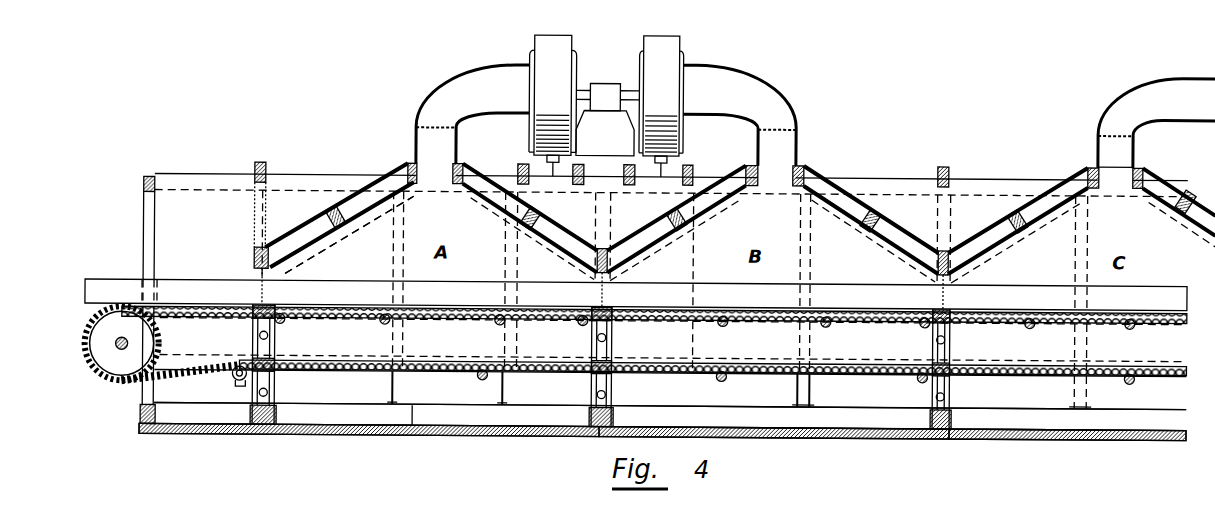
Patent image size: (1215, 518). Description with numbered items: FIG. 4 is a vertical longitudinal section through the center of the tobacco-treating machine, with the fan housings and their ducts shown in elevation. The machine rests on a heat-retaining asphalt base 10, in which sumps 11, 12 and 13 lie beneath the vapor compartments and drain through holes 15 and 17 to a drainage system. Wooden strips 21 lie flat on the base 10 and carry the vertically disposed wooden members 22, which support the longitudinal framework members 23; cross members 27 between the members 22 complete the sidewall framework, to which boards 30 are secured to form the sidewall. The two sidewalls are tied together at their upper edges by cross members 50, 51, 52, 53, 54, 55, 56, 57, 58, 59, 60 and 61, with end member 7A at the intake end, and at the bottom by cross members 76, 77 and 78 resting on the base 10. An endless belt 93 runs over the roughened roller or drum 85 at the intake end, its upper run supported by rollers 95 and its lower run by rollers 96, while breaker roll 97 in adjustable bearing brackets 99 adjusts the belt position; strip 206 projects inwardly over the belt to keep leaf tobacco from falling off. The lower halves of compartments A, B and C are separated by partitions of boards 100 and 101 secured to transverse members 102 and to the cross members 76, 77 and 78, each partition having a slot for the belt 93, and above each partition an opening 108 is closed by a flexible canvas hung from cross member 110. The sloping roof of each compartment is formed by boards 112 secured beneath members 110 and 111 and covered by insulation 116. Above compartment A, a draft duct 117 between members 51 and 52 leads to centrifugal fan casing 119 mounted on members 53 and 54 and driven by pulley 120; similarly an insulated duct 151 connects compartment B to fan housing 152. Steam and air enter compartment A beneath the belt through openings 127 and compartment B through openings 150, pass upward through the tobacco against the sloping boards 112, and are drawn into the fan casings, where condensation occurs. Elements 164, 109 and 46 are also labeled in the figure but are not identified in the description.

The end member 7A is at (146, 176).
The longitudinally disposed framework members 23 is at (206, 166).
The vertically disposed wooden members 22 is at (143, 221).
The cross member 50 is at (265, 163).
The cross member 51 is at (407, 162).
The cross member 52 is at (458, 161).
The cross member 53 is at (519, 161).
The cross member 54 is at (576, 161).
The cross member 55 is at (628, 161).
The cross member 56 is at (687, 161).
The cross member 57 is at (751, 161).
The cross member 58 is at (798, 161).
The cross member 59 is at (944, 162).
The cross member 60 is at (1092, 161).
The cross member 61 is at (1137, 161).
The draft duct 117 is at (415, 125).
The insulated duct 151 is at (789, 110).
The air duct 164 is at (1130, 88).
The centrifugal fan casing 119 is at (568, 32).
The fan housing 152 is at (660, 32).
The pulley 120 is at (614, 84).
The insulating members 116 is at (318, 218).
The cross member 110 is at (280, 260).
The intermediate members 111 is at (343, 213).
The board 112 is at (352, 220).
The boards 30 is at (349, 234).
The opening 108 is at (254, 266).
The bracket connection 109 is at (270, 268).
The strip 206 is at (636, 295).
The roughened roller or drum 85 is at (160, 334).
The endless belt 93 is at (220, 366).
The breaker roll 97 is at (233, 376).
The adjustable bearing brackets 99 is at (236, 384).
The boards 100 is at (253, 330).
The boards 101 is at (268, 334).
The transverse members 102 is at (275, 318).
The cross member 76 is at (251, 413).
The cross member 77 is at (614, 411).
The cross member 78 is at (952, 414).
The rollers 95 is at (280, 312).
The rollers 96 is at (483, 377).
The cross members 27 is at (334, 320).
The opening 127 is at (382, 387).
The openings 150 is at (898, 391).
The longitudinally disposed strips 21 is at (375, 414).
The sump 12 is at (804, 402).
The sump 13 is at (1127, 423).
The sump 11 is at (415, 410).
The base 10 is at (320, 435).
The drain hole 15 is at (424, 435).
The floor section 46 is at (758, 435).
The drain hole 17 is at (1102, 435).